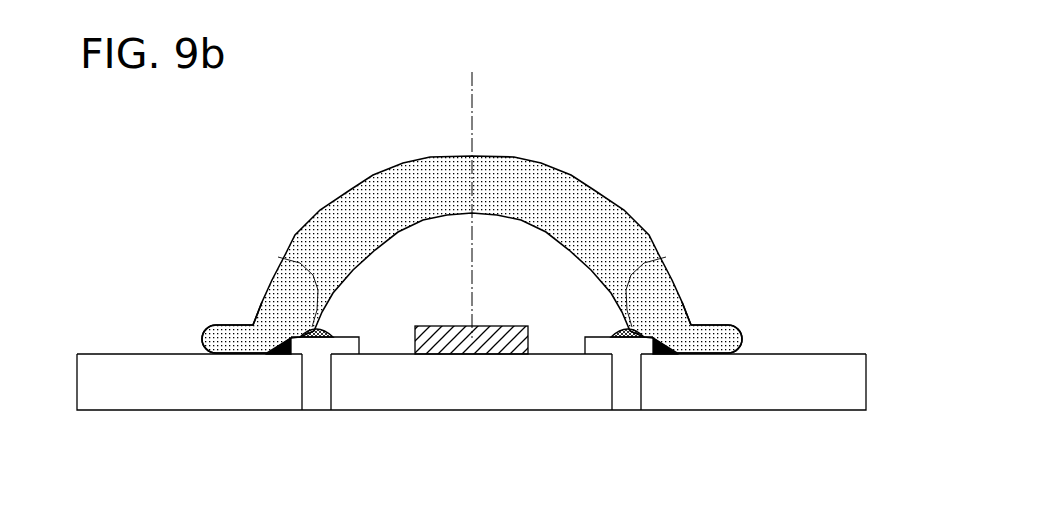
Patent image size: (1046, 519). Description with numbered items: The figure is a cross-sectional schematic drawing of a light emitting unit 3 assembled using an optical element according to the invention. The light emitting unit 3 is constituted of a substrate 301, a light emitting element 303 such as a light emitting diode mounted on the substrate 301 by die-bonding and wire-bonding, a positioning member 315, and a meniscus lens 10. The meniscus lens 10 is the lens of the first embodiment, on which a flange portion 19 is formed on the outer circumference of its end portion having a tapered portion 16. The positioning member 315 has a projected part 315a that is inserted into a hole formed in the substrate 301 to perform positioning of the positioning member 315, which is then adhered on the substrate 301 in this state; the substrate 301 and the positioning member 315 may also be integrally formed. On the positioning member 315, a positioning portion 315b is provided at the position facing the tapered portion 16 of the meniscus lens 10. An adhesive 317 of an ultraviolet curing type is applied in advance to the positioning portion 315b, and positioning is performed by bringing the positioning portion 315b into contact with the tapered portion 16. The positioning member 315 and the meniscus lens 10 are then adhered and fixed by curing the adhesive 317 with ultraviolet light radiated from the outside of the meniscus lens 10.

The light emitting unit 3 is at (764, 156).
The meniscus lens 10 is at (527, 190).
The tapered portion 16 is at (274, 328).
The flange portion 19 is at (214, 325).
The substrate 301 is at (555, 410).
The light emitting element 303 is at (468, 356).
The positioning member 315 is at (583, 337).
The projected part 315a is at (316, 388).
The positioning portion 315b is at (289, 357).
The adhesive 317 is at (228, 325).